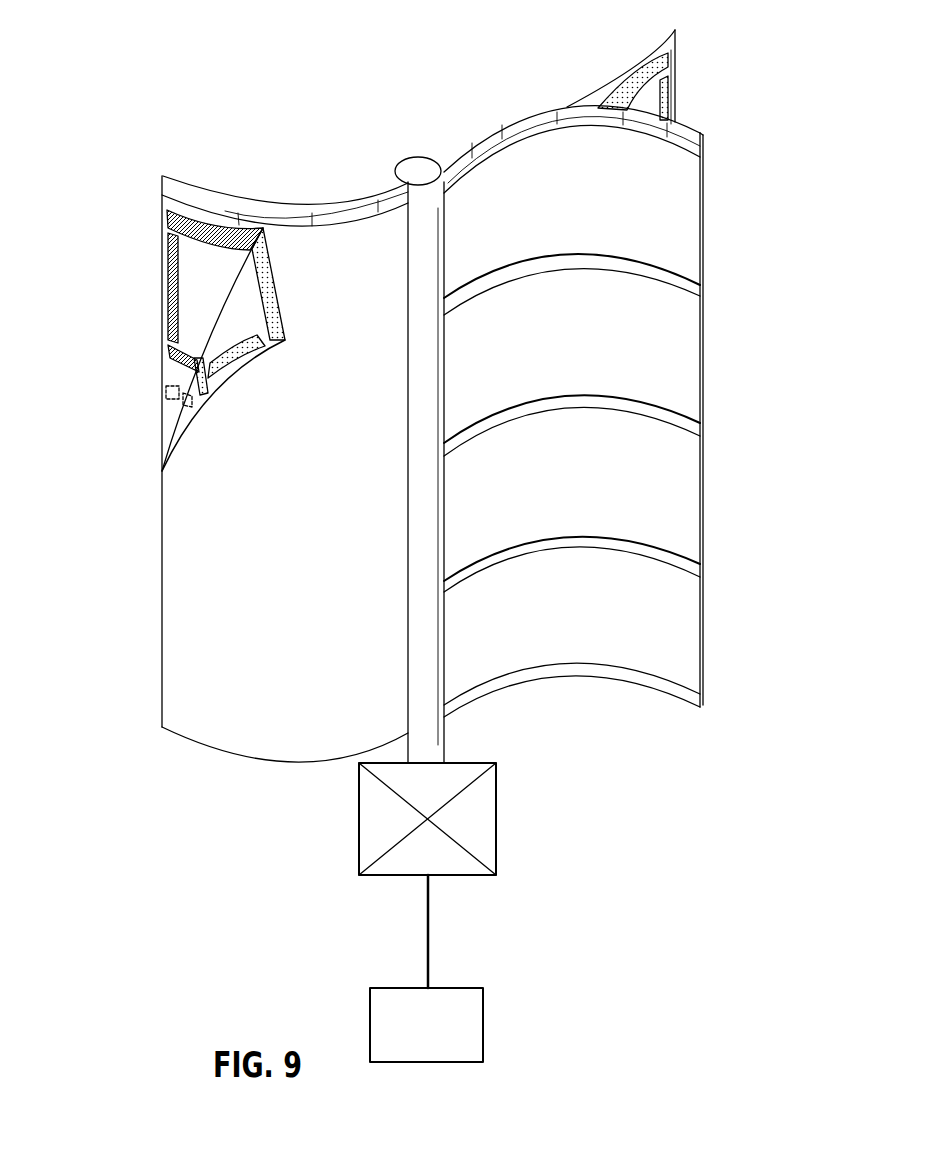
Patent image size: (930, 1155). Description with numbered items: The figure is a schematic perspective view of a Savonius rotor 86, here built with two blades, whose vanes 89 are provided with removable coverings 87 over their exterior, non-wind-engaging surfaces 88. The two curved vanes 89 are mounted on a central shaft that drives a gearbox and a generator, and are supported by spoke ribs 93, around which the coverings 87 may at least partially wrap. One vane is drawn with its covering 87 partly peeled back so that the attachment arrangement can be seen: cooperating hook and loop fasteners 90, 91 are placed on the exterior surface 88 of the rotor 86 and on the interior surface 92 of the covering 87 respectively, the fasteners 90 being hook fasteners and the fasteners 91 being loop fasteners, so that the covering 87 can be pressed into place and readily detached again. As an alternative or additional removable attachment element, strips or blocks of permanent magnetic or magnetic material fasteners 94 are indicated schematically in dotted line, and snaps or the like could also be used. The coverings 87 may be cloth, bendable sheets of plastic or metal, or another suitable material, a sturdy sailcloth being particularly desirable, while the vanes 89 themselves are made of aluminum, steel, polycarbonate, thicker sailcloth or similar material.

The Savonius rotor 86 is at (412, 536).
The removable covering 87 is at (673, 43).
The exterior surface 88 is at (166, 281).
The vane 89 is at (140, 624).
The hook fastener 90 is at (173, 267).
The loop fastener 91 is at (263, 282).
The interior surface 92 is at (247, 308).
The spoke rib 93 is at (673, 137).
The magnetic material fastener 94 is at (183, 402).